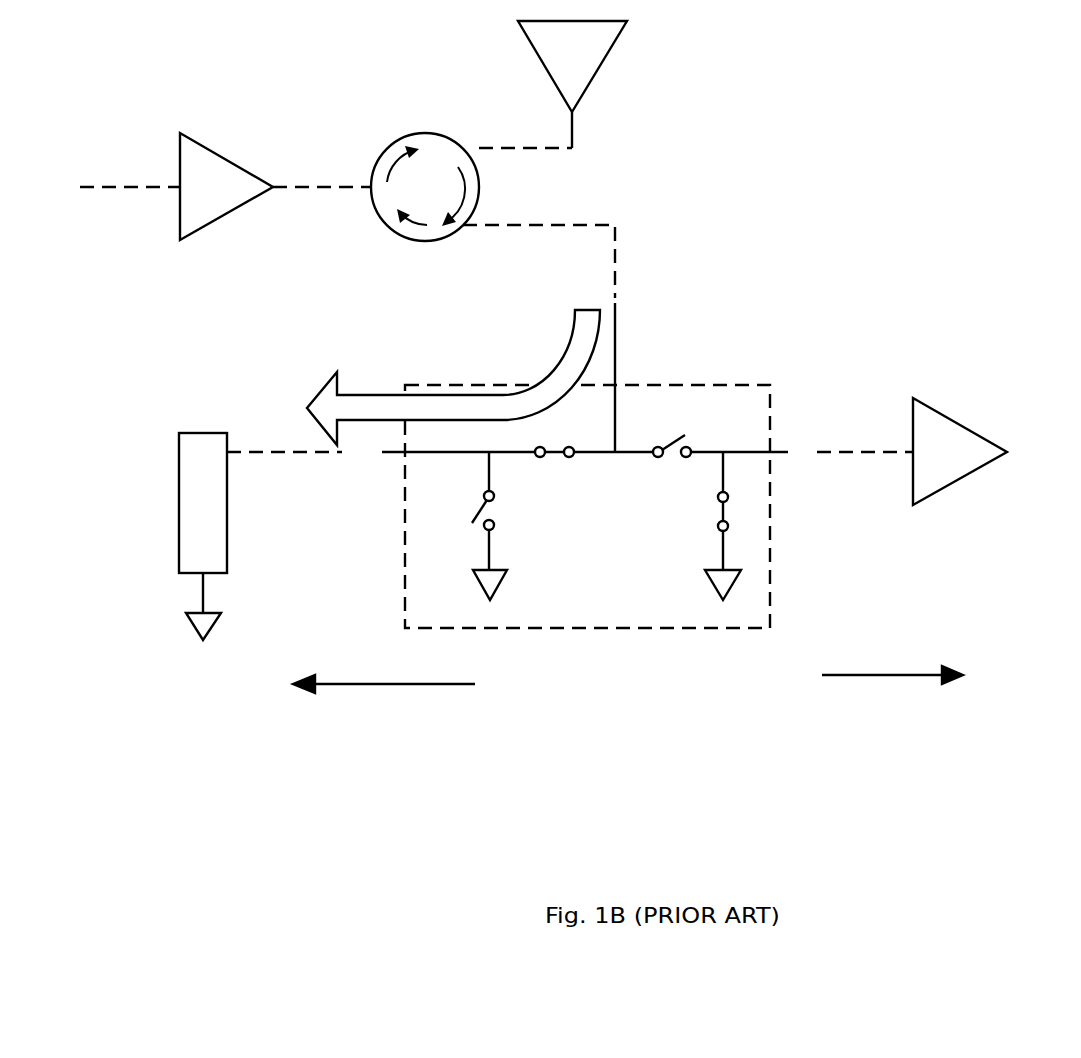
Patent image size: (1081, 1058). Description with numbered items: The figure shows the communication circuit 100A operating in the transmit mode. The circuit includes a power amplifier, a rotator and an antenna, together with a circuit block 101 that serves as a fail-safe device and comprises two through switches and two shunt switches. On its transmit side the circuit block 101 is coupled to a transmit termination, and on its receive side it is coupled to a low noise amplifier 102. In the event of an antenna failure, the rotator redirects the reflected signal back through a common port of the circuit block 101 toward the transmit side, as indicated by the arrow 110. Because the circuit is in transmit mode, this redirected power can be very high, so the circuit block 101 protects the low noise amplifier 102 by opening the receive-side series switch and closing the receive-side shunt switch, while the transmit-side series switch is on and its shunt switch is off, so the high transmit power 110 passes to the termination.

The communication circuit 100A is at (567, 412).
The circuit block 101 is at (730, 385).
The low noise amplifier 102 is at (922, 400).
The arrow 110 is at (338, 375).